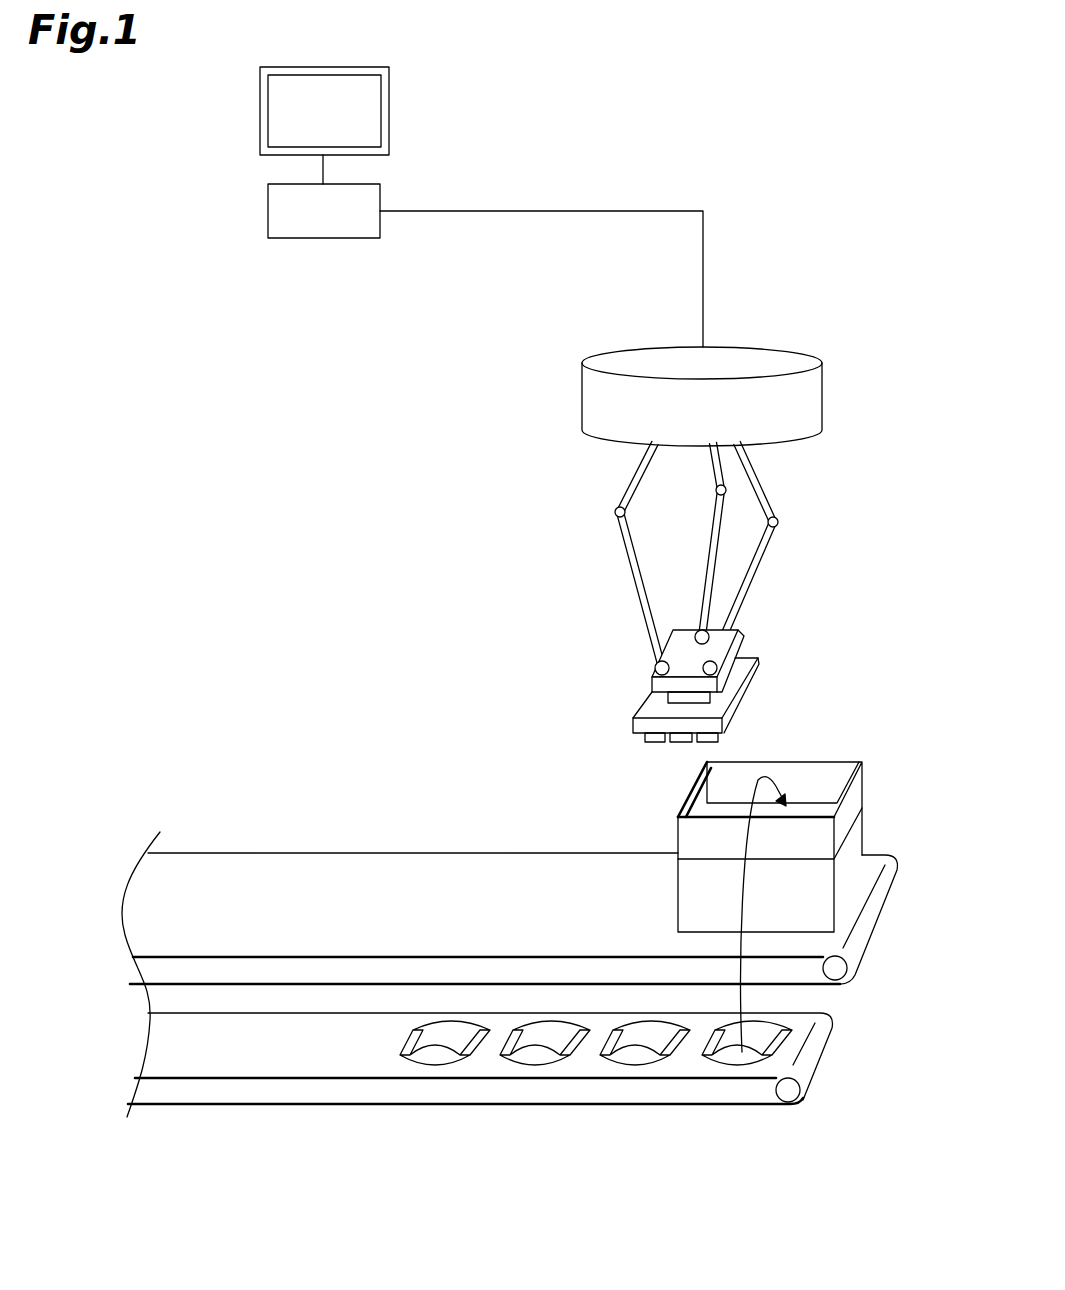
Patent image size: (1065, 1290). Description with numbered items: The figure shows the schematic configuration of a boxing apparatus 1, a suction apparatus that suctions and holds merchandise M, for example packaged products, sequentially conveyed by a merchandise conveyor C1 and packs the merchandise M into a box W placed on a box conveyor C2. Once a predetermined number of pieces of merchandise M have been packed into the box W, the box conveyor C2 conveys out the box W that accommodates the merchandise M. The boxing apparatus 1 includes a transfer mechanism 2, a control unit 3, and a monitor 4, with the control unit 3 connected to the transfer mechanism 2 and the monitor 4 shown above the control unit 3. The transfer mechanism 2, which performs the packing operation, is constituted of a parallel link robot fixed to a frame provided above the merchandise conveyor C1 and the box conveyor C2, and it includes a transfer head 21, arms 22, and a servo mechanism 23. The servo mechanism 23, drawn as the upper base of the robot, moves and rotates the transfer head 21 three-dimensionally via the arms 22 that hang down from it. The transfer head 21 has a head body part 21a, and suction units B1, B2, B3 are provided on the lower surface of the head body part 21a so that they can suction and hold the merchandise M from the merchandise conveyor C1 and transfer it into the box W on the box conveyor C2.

The boxing apparatus 1 is at (808, 336).
The transfer mechanism 2 is at (626, 347).
The control unit 3 is at (380, 195).
The monitor 4 is at (391, 106).
The transfer head 21 is at (760, 656).
The head body part 21a is at (730, 682).
The arms 22 is at (768, 493).
The servo mechanism 23 is at (825, 398).
The suction unit B1 is at (652, 743).
The suction unit B2 is at (680, 741).
The suction unit B3 is at (717, 745).
The merchandise conveyor C1 is at (320, 1078).
The box conveyor C2 is at (318, 853).
The merchandise M is at (737, 1040).
The box W is at (867, 825).